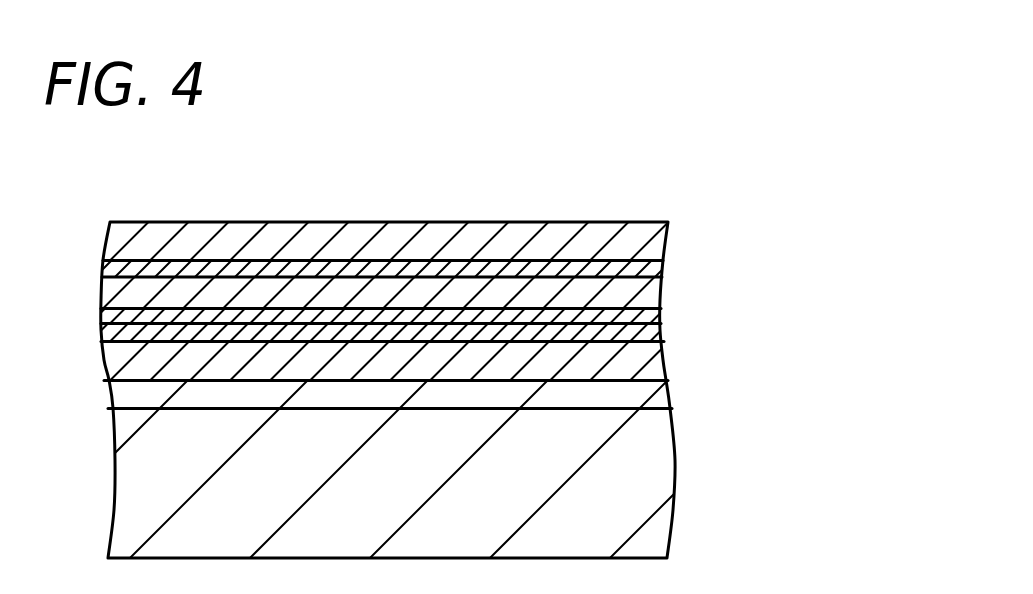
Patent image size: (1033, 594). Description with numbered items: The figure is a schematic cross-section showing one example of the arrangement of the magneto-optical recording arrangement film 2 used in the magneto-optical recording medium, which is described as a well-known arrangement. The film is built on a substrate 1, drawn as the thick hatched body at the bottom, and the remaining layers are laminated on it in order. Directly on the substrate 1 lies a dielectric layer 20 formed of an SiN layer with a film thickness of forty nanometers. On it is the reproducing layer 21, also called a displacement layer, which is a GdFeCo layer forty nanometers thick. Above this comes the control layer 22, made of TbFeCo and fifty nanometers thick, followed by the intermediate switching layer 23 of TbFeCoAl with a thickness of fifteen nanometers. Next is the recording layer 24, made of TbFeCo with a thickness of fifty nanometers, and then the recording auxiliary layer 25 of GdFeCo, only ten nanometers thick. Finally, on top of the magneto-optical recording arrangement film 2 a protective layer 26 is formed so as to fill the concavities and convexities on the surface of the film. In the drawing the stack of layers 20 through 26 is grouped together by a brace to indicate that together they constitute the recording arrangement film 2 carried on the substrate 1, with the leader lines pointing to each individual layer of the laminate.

The substrate 1 is at (625, 525).
The magneto-optical recording arrangement film 2 is at (471, 307).
The dielectric layer 20 is at (638, 392).
The reproducing layer 21 is at (655, 367).
The control layer 22 is at (665, 335).
The intermediate switching layer 23 is at (668, 313).
The recording layer 24 is at (668, 285).
The recording auxiliary layer 25 is at (668, 243).
The protective layer 26 is at (448, 199).